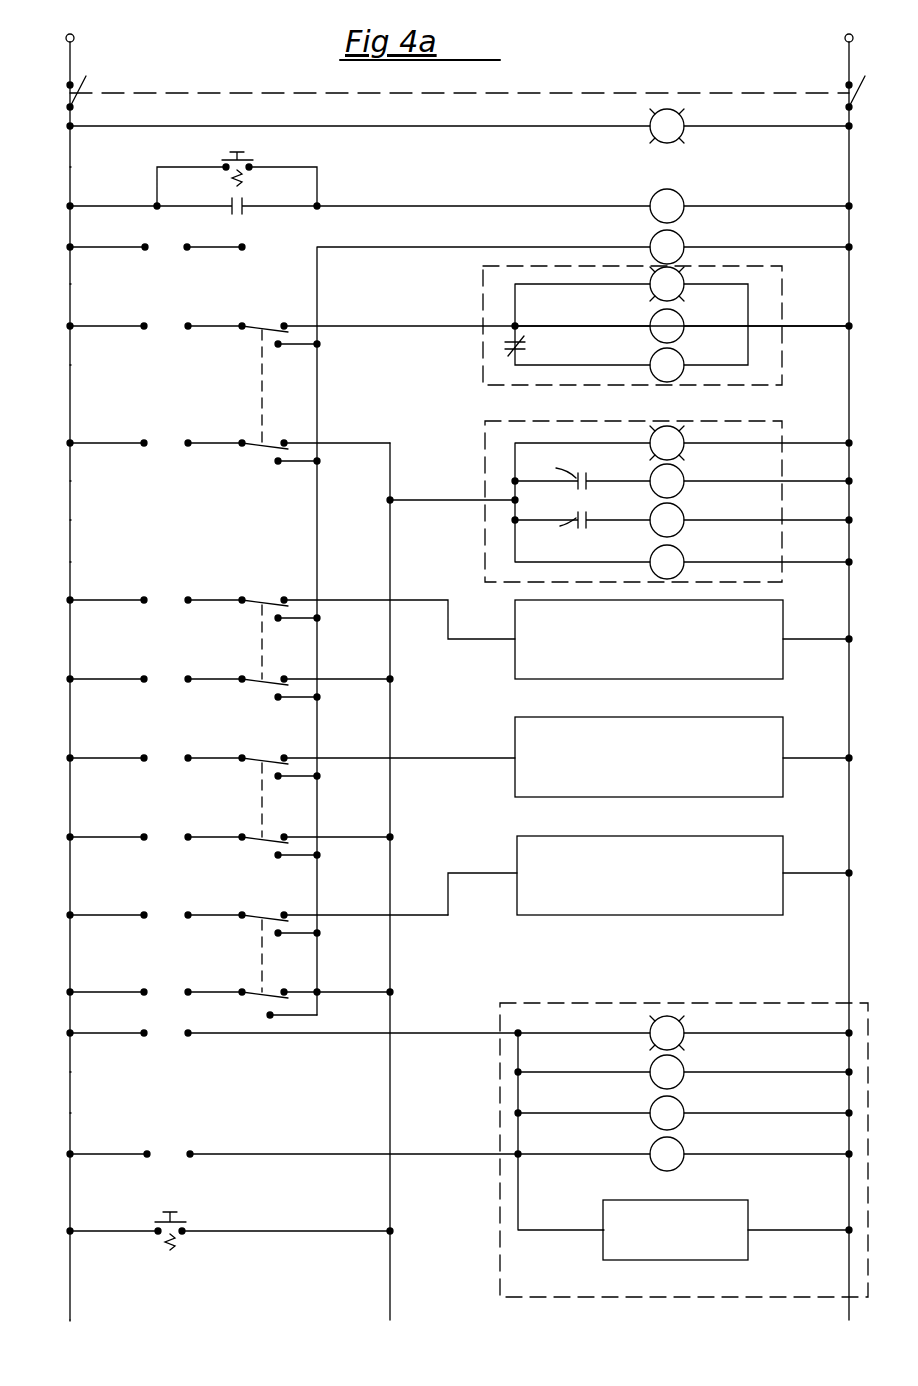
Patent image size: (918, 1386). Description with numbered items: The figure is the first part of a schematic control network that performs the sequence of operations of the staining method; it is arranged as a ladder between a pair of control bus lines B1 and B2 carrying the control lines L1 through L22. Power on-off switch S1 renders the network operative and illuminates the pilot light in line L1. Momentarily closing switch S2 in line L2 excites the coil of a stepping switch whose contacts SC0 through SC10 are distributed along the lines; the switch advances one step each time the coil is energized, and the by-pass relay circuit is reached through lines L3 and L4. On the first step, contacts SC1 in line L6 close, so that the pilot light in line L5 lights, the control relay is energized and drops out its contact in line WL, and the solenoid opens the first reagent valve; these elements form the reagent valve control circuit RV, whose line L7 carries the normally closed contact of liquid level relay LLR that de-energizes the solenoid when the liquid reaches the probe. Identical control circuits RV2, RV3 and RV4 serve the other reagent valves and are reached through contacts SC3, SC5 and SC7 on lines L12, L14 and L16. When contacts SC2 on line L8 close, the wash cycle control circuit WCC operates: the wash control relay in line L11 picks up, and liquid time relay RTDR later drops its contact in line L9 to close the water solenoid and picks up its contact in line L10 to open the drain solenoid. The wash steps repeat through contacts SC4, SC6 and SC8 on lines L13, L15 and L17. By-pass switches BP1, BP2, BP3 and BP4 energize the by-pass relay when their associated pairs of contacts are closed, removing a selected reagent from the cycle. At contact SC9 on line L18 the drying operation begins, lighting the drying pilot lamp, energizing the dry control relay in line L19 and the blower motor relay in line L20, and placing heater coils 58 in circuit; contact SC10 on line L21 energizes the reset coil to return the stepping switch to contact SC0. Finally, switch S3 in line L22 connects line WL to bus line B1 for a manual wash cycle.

The power on-off switch S1 is at (82, 83).
The start switch S2 is at (250, 160).
The manual wash switch S3 is at (205, 1217).
The stepping switch contact SC0 is at (156, 234).
The stepping switch contact SC1 is at (458, 322).
The stepping switch contact SC2 is at (228, 439).
The stepping switch contact SC3 is at (291, 605).
The stepping switch contact SC4 is at (230, 675).
The stepping switch contact SC5 is at (291, 754).
The stepping switch contact SC6 is at (230, 833).
The stepping switch contact SC7 is at (257, 911).
The stepping switch contact SC8 is at (230, 991).
The stepping switch contact SC9 is at (292, 1020).
The stepping switch contact SC10 is at (292, 1141).
The by-pass switch BP1 is at (260, 404).
The by-pass switch BP2 is at (262, 643).
The by-pass switch BP3 is at (262, 807).
The by-pass switch BP4 is at (262, 963).
The reagent valve control circuit RV is at (783, 290).
The reagent valve control circuit RV2 is at (785, 622).
The reagent valve control circuit RV3 is at (785, 740).
The reagent valve control circuit RV4 is at (785, 858).
The wash cycle control circuit WCC is at (783, 436).
The liquid level relay LLR is at (522, 346).
The liquid time relay RTDR is at (548, 504).
The wash line WL is at (388, 1285).
The control bus line B1 is at (72, 1278).
The control bus line B2 is at (868, 1281).
The heater coil 58 is at (603, 1243).
The control line L1 is at (443, 126).
The control line L2 is at (52, 167).
The control line L3 is at (443, 206).
The control line L4 is at (443, 622).
The control line L5 is at (52, 285).
The control line L6 is at (52, 326).
The control line L7 is at (52, 365).
The control line L8 is at (52, 443).
The control line L9 is at (52, 483).
The control line L10 is at (51, 523).
The control line L11 is at (51, 563).
The control line L12 is at (51, 601).
The control line L13 is at (51, 680).
The control line L14 is at (51, 759).
The control line L15 is at (51, 838).
The control line L16 is at (51, 916).
The control line L17 is at (51, 993).
The control line L18 is at (51, 1034).
The control line L19 is at (51, 1073).
The control line L20 is at (51, 1114).
The control line L21 is at (51, 1155).
The control line L22 is at (51, 1232).